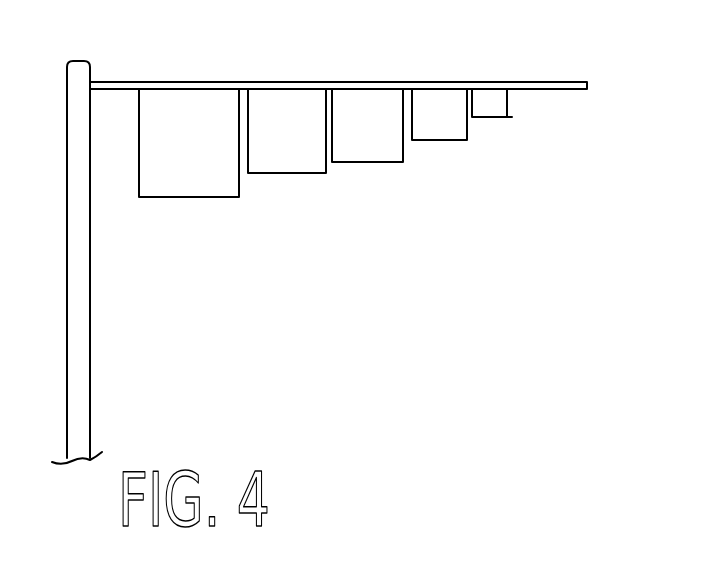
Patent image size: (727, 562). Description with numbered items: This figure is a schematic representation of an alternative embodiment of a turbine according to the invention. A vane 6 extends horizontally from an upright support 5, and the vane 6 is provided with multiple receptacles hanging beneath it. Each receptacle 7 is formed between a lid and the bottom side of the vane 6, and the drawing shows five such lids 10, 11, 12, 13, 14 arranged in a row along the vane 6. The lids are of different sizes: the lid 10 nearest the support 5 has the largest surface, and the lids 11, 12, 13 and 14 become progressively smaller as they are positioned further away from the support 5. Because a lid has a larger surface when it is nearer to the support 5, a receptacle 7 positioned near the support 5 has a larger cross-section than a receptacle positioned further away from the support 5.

The support 5 is at (90, 312).
The vane 6 is at (573, 73).
The receptacle 7 is at (182, 34).
The first panel 10 is at (202, 198).
The second panel 11 is at (285, 173).
The third panel 12 is at (363, 162).
The fourth panel 13 is at (438, 140).
The fifth panel 14 is at (490, 117).